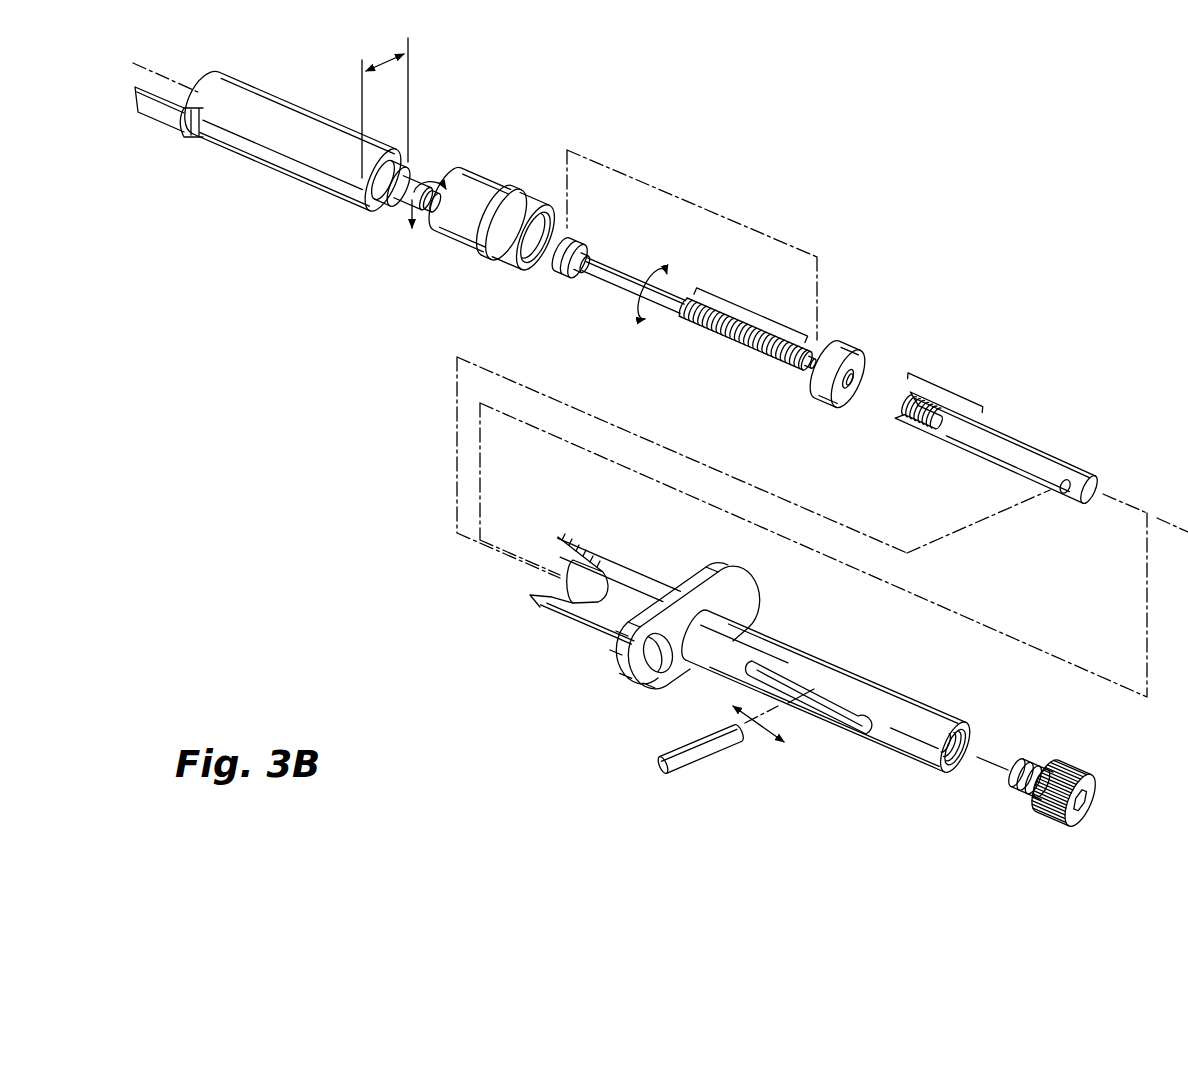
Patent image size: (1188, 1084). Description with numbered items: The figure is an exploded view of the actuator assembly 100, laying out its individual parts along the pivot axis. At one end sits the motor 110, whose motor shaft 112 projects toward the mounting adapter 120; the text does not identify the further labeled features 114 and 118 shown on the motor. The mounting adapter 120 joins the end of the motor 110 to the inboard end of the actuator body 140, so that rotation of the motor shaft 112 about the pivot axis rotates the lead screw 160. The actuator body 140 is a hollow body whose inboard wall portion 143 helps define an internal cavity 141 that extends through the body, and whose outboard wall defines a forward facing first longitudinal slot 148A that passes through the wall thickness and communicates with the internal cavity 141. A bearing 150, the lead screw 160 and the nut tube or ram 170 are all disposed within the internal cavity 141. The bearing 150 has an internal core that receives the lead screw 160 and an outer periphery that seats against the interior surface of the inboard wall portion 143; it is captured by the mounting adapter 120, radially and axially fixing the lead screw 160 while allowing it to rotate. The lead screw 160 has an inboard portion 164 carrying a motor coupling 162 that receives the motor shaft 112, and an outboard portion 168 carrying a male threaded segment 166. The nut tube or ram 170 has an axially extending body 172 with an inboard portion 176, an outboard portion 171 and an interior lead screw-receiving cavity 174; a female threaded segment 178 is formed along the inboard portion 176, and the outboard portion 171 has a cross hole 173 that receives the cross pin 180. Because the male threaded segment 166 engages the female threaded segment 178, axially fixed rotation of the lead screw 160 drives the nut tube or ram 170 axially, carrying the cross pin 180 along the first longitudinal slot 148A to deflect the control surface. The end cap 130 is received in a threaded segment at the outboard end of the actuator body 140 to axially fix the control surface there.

The actuator assembly 100 is at (918, 156).
The motor 110 is at (270, 84).
The motor shaft 112 is at (158, 113).
The sleeve slot 114 is at (196, 147).
The sleeve hub 118 is at (372, 222).
The mounting adapter 120 is at (502, 178).
The end cap 130 is at (1058, 760).
The actuator body 140 is at (808, 632).
The internal cavity 141 is at (570, 594).
The inboard wall portion 143 is at (551, 546).
The first longitudinal slot 148A is at (846, 713).
The bearing 150 is at (851, 336).
The lead screw 160 is at (632, 243).
The motor coupling 162 is at (560, 270).
The inboard portion 164 is at (567, 293).
The male threaded segment 166 is at (756, 305).
The outboard portion 168 is at (788, 373).
The nut tube or ram 170 is at (982, 428).
The outboard portion 171 is at (1089, 454).
The axially extending body 172 is at (1008, 455).
The cross hole 173 is at (1060, 502).
The lead screw-receiving cavity 174 is at (908, 396).
The inboard portion 176 is at (926, 453).
The female threaded segment 178 is at (953, 380).
The cross pin 180 is at (660, 768).